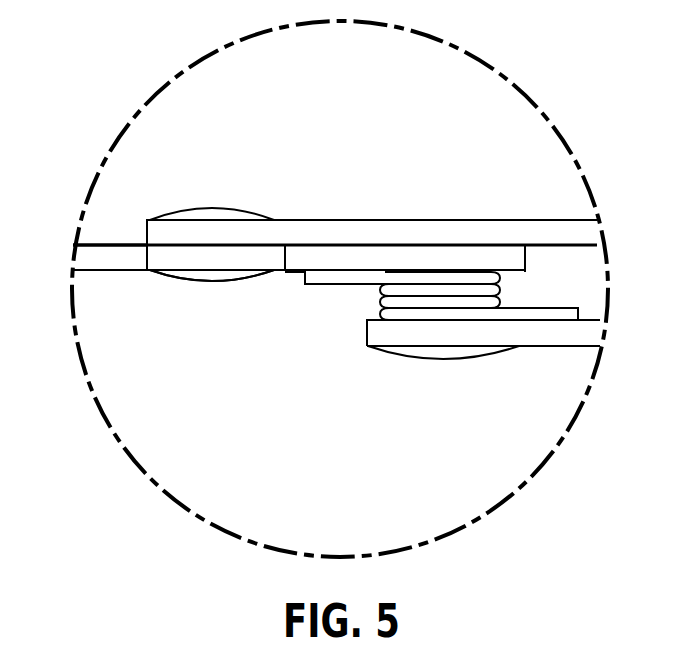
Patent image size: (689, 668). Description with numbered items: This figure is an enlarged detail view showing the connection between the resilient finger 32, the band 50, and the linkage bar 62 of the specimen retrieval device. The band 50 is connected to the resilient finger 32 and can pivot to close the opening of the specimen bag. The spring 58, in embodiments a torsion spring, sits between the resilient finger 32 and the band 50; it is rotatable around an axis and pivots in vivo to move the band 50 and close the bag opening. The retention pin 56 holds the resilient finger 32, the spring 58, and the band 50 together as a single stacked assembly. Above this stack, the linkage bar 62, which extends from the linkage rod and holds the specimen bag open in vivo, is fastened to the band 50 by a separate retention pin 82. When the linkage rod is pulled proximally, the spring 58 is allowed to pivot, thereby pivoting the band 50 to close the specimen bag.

The resilient finger 32 is at (560, 335).
The band 50 is at (102, 263).
The second retention pin 56 is at (440, 356).
The second spring 58 is at (463, 291).
The linkage bar 62 is at (157, 223).
The retention pin 82 is at (213, 278).